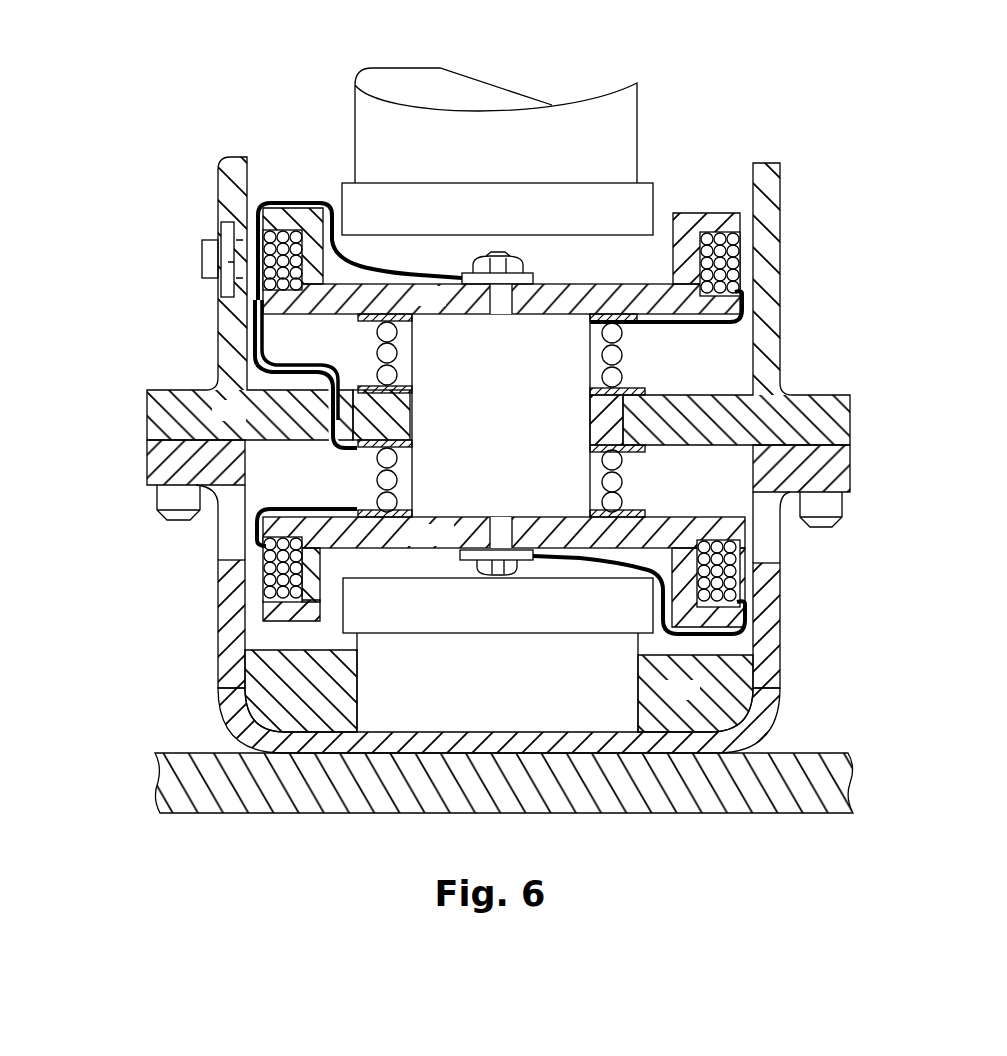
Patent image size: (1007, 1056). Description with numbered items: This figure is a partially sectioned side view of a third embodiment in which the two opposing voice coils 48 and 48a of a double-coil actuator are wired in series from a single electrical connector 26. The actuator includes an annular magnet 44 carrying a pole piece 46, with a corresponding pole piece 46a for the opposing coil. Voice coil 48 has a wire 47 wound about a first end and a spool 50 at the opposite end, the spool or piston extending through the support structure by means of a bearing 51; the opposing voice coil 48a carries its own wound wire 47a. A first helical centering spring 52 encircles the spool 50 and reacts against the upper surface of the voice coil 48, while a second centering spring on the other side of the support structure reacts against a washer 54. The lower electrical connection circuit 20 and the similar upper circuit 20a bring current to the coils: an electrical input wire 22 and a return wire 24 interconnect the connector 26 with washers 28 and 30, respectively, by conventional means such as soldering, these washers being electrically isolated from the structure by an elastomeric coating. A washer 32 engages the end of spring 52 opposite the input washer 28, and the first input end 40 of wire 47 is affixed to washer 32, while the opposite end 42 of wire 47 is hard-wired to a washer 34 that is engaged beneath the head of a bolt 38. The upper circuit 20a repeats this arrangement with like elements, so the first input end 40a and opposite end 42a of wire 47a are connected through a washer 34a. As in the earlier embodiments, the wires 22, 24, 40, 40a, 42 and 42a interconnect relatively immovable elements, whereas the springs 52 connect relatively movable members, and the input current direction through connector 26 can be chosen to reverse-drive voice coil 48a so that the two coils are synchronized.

The electrical connection circuit 20 is at (687, 203).
The upper circuit 20a is at (299, 630).
The electrical input wire 22 is at (277, 352).
The return wire 24 is at (498, 342).
The electrical connector 26 is at (200, 262).
The washer 28 is at (638, 449).
The washer 30 is at (640, 390).
The washer 32 is at (638, 514).
The washer 34 is at (537, 279).
The washer 34a is at (460, 562).
The bolt 38 is at (515, 576).
The first input end of wire 40 is at (722, 324).
The first input end of wire 40a is at (315, 505).
The opposite end of wire 42 is at (272, 199).
The opposite end of wire 42a is at (735, 640).
The annular magnet 44 is at (697, 701).
The pole piece 46 is at (507, 164).
The pole piece 46a is at (512, 687).
The wire 47 is at (752, 250).
The wire 47a is at (742, 553).
The voice coil 48 is at (443, 306).
The voice coil 48a is at (410, 547).
The spool 50 is at (481, 428).
The bearing 51 is at (410, 418).
The first helical centering spring 52 is at (600, 481).
The washer 54 is at (406, 323).